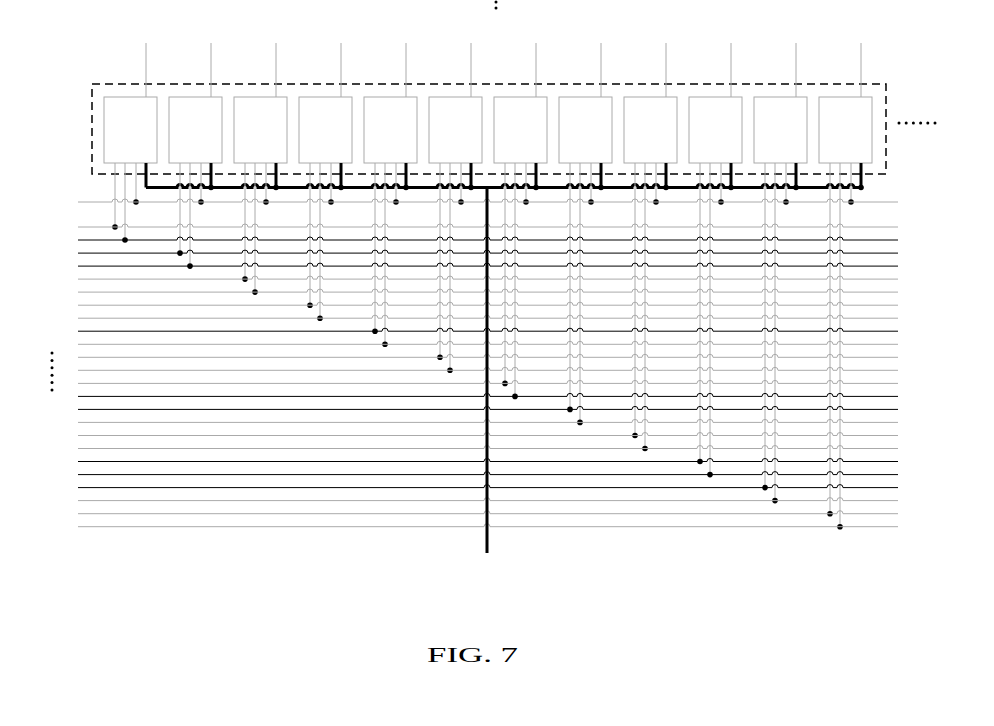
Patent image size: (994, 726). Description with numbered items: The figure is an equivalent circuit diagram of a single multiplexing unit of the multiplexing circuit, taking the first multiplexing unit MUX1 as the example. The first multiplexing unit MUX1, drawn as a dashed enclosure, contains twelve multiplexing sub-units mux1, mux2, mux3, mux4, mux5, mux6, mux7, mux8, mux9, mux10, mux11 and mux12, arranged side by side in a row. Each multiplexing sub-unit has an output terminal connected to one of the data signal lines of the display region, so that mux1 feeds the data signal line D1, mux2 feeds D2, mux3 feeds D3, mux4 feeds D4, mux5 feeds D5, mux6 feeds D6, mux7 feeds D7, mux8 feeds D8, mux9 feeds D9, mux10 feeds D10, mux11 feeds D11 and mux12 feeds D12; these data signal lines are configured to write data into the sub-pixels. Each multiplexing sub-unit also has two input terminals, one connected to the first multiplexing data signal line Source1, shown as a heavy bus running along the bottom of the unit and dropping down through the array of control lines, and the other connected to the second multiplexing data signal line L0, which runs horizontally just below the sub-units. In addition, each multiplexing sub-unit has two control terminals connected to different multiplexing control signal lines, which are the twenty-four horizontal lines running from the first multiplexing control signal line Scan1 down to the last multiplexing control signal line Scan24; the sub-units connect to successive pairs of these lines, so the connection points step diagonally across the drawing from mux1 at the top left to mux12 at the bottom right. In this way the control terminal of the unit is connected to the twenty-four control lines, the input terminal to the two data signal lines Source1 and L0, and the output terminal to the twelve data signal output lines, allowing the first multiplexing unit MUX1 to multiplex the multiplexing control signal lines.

The first multiplexing unit MUX1 is at (92, 84).
The data signal line D1 is at (146, 58).
The data signal line D2 is at (211, 58).
The data signal line D3 is at (276, 58).
The data signal line D4 is at (341, 58).
The data signal line D5 is at (406, 58).
The data signal line D6 is at (471, 58).
The data signal line D7 is at (536, 58).
The data signal line D8 is at (601, 58).
The data signal line D9 is at (666, 58).
The data signal line D10 is at (731, 58).
The data signal line D11 is at (795, 58).
The data signal line D12 is at (861, 58).
The multiplexing sub-unit mux1 is at (130, 170).
The multiplexing sub-unit mux2 is at (195, 183).
The multiplexing sub-unit mux3 is at (260, 196).
The multiplexing sub-unit mux4 is at (325, 209).
The multiplexing sub-unit mux5 is at (390, 222).
The multiplexing sub-unit mux6 is at (455, 235).
The multiplexing sub-unit mux7 is at (520, 248).
The multiplexing sub-unit mux8 is at (585, 261).
The multiplexing sub-unit mux9 is at (650, 274).
The multiplexing sub-unit mux10 is at (715, 287).
The multiplexing sub-unit mux11 is at (780, 300).
The multiplexing sub-unit mux12 is at (845, 313).
The second multiplexing data signal line L0 is at (469, 200).
The multiplexing control signal line Scan1 is at (462, 226).
The multiplexing control signal line Scan24 is at (456, 526).
The first multiplexing data signal line Source1 is at (487, 381).